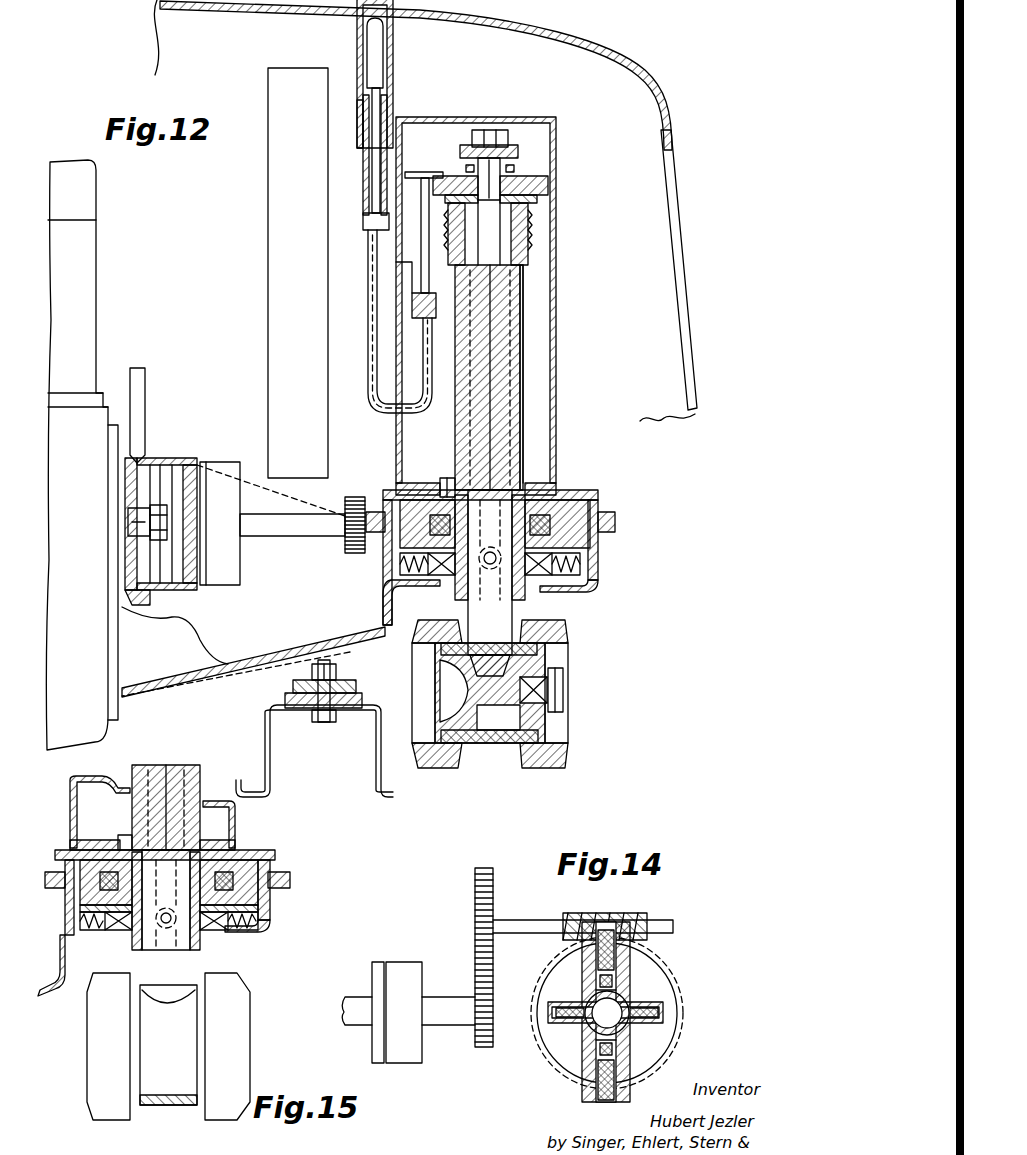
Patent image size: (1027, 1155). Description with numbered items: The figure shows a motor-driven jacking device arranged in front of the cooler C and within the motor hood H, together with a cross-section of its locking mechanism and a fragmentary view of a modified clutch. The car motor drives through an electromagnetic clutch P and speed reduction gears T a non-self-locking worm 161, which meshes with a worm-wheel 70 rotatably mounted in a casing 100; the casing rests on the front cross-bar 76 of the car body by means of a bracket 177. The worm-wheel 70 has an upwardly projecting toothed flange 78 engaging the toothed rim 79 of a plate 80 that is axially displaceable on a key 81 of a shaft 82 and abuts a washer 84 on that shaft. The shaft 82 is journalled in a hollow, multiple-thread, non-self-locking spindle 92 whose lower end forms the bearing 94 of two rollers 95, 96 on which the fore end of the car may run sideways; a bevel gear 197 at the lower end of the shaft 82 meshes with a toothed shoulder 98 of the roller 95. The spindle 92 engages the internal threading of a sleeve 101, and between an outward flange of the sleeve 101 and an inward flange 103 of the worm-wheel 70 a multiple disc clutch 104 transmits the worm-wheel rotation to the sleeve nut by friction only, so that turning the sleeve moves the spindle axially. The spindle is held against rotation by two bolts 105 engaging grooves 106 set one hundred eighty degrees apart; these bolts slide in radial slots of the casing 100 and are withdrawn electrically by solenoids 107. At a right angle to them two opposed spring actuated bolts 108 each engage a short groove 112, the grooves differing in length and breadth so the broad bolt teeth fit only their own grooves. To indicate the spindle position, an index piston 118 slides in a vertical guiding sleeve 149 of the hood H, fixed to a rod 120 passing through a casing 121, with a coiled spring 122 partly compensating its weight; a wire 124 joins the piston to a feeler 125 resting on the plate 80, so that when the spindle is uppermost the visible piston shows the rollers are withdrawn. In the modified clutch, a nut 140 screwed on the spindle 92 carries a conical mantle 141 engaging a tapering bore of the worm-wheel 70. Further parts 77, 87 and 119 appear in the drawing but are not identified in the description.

In FIG. 12, the worm-wheel 70 is at (600, 516).
In FIG. 14, the worm-wheel 70 is at (540, 1038).
In FIG. 15, the worm-wheel 70 is at (290, 877).
In FIG. 12, the front cross-bar 76 is at (381, 766).
In FIG. 12, the flange 77 is at (548, 487).
In FIG. 15, the flange 77 is at (214, 834).
In FIG. 12, the toothed flange 78 is at (437, 484).
In FIG. 15, the toothed flange 78 is at (123, 838).
In FIG. 12, the toothed rim 79 is at (540, 197).
In FIG. 12, the plate 80 is at (530, 177).
In FIG. 12, the key 81 is at (505, 172).
In FIG. 12, the shaft 82 is at (490, 130).
In FIG. 15, the shaft 82 is at (196, 945).
In FIG. 12, the washer 84 is at (466, 145).
In FIG. 12, the nut 87 is at (468, 168).
In FIG. 12, the hollow screw-threaded spindle 92 is at (524, 362).
In FIG. 14, the hollow screw-threaded spindle 92 is at (640, 1030).
In FIG. 15, the hollow screw-threaded spindle 92 is at (201, 776).
In FIG. 12, the bearing 94 is at (510, 744).
In FIG. 15, the bearing 94 is at (168, 1106).
In FIG. 12, the roller 95 is at (436, 769).
In FIG. 15, the roller 95 is at (87, 1050).
In FIG. 12, the roller 96 is at (549, 770).
In FIG. 15, the roller 96 is at (246, 1042).
In FIG. 12, the toothed shoulder 98 is at (478, 712).
In FIG. 12, the casing 100 is at (594, 562).
In FIG. 15, the casing 100 is at (270, 918).
In FIG. 12, the sleeve 101 is at (451, 490).
In FIG. 12, the flange 103 is at (592, 538).
In FIG. 12, the multiple disc clutch 104 is at (576, 498).
In FIG. 14, the bolts 105 is at (562, 953).
In FIG. 12, the grooves 106 is at (490, 297).
In FIG. 15, the grooves 106 is at (166, 768).
In FIG. 14, the solenoids 107 is at (593, 920).
In FIG. 12, the spring actuated bolts 108 is at (440, 572).
In FIG. 14, the spring actuated bolts 108 is at (628, 1003).
In FIG. 15, the spring actuated bolts 108 is at (120, 931).
In FIG. 12, the short groove 112 is at (521, 283).
In FIG. 15, the short groove 112 is at (125, 843).
In FIG. 12, the index piston 118 is at (383, 52).
In FIG. 12, the threaded sleeve 119 is at (530, 208).
In FIG. 12, the rod 120 is at (375, 195).
In FIG. 12, the casing 121 is at (372, 170).
In FIG. 12, the coiled spring 122 is at (357, 118).
In FIG. 12, the wire 124 is at (368, 349).
In FIG. 12, the feeler 125 is at (420, 233).
In FIG. 15, the nut 140 is at (240, 858).
In FIG. 15, the conical mantle 141 is at (262, 907).
In FIG. 12, the vertical guiding sleeve 149 is at (357, 35).
In FIG. 14, the non-self-locking worm 161 is at (633, 907).
In FIG. 12, the bracket 177 is at (253, 668).
In FIG. 15, the bracket 177 is at (58, 991).
In FIG. 12, the bevel gear 197 is at (512, 665).
In FIG. 12, the cooler C is at (268, 180).
In FIG. 12, the motor hood H is at (594, 53).
In FIG. 12, the electromagnetic clutch P is at (207, 586).
In FIG. 14, the electromagnetic clutch P is at (392, 961).
In FIG. 12, the speed reduction gears T is at (350, 497).
In FIG. 14, the speed reduction gears T is at (475, 990).